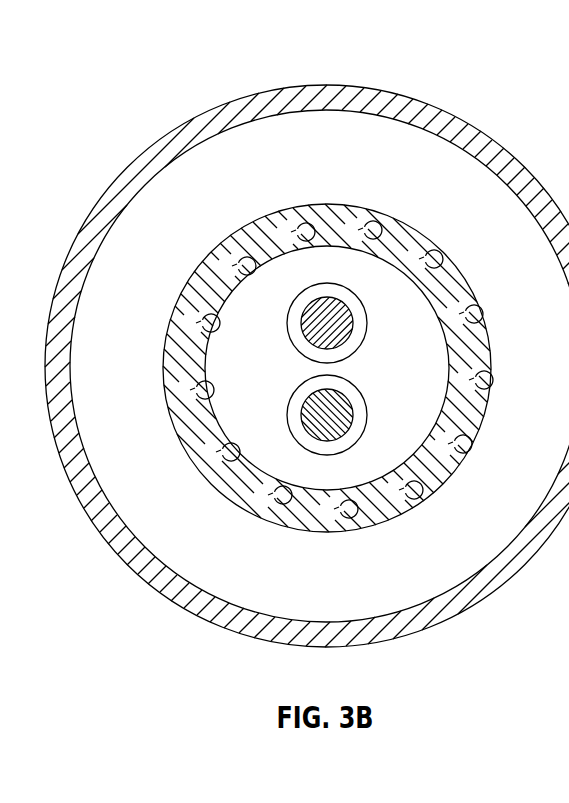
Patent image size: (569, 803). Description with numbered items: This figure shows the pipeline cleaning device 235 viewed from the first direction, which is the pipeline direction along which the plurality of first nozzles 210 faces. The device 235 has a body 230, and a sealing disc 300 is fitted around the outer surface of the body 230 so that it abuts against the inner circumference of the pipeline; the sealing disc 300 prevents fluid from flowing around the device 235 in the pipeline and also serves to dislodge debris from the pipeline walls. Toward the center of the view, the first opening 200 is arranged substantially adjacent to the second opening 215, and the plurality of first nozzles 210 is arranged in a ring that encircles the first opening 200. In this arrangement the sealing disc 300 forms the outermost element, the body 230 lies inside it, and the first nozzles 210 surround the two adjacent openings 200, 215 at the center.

The device 235 is at (143, 46).
The sealing disc 300 is at (466, 112).
The body 230 is at (147, 210).
The plurality of first nozzles 210 is at (351, 220).
The second opening 215 is at (301, 354).
The first opening 200 is at (355, 384).